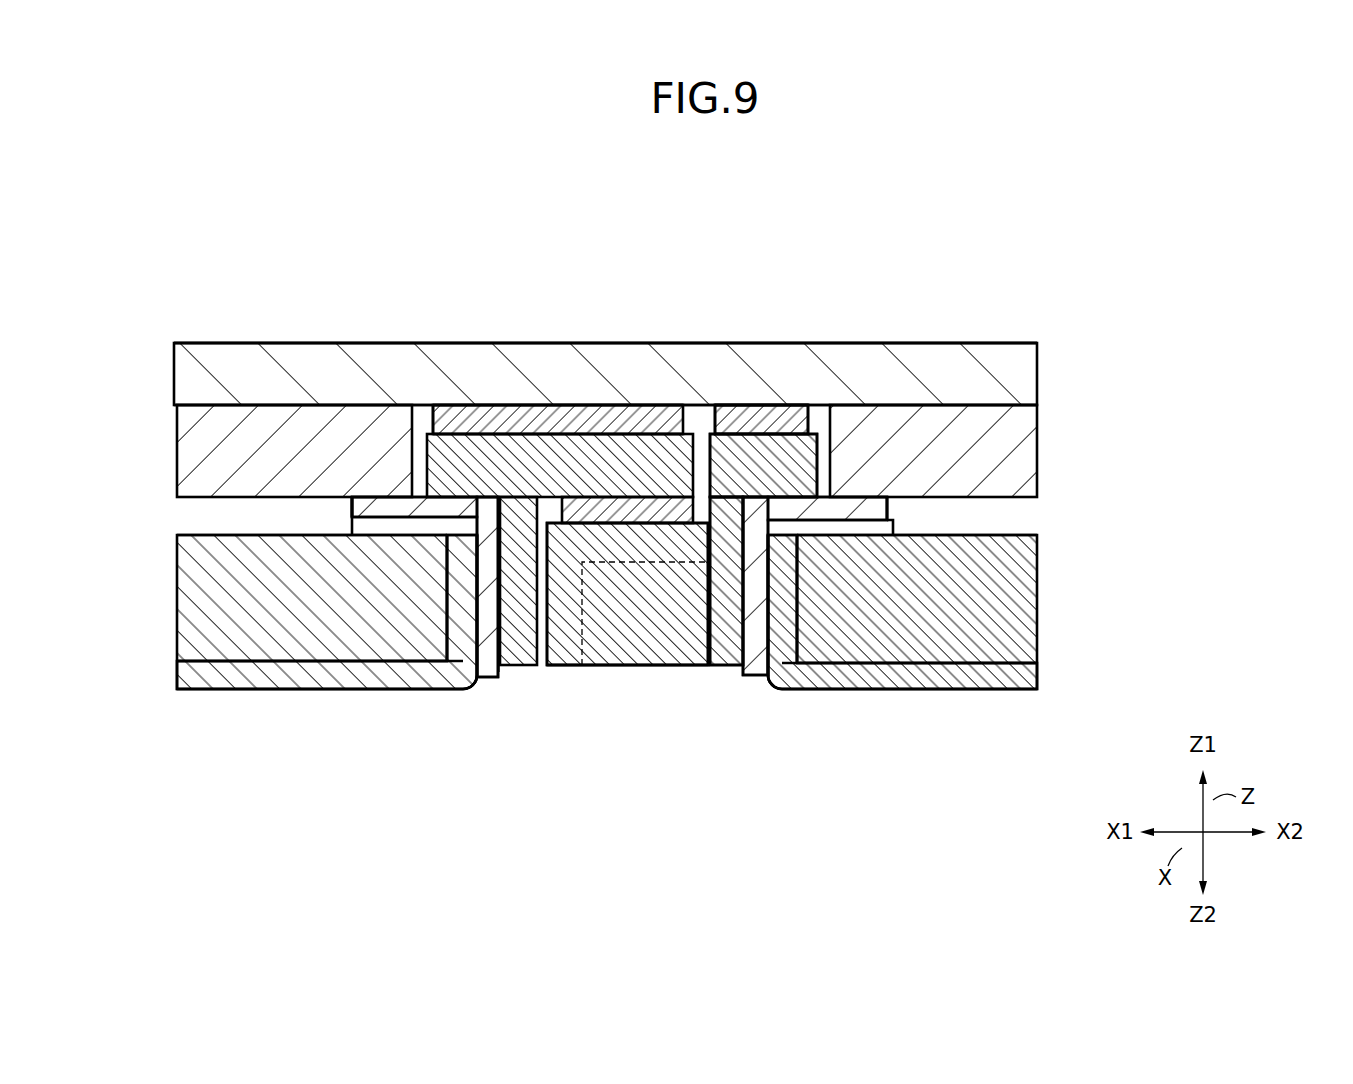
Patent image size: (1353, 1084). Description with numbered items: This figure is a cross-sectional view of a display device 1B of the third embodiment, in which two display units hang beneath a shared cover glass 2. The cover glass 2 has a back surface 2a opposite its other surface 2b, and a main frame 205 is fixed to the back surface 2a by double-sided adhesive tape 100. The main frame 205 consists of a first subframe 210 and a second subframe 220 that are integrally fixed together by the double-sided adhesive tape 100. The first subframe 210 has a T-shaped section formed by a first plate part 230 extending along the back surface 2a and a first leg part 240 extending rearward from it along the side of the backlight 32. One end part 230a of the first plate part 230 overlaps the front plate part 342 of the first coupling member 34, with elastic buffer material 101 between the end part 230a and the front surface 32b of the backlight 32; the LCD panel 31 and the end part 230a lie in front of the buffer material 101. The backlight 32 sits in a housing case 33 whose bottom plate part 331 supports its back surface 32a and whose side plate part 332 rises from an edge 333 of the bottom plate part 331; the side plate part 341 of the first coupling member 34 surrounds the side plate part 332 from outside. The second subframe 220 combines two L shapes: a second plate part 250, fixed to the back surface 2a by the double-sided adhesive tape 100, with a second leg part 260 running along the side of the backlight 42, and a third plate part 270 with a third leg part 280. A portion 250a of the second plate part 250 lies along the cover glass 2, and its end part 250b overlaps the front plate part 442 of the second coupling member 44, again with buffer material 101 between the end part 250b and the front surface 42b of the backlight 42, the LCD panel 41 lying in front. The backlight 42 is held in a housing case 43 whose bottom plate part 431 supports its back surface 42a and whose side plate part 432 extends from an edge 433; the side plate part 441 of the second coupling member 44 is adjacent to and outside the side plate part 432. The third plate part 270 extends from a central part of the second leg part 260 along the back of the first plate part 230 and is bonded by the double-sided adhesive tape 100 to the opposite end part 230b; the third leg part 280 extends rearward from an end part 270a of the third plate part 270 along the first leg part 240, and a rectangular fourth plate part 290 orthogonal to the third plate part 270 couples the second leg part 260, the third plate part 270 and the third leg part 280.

The vibrating device 1B is at (697, 181).
The cover glass 2 is at (990, 360).
The back surface of the cover glass 2a is at (1040, 407).
The upper surface of base substrate 2b is at (1018, 342).
The LCD panel 31 is at (177, 445).
The backlight 32 is at (177, 598).
The back surface of the backlight 32a is at (234, 664).
The front surface of the backlight 32b is at (226, 530).
The housing case 33 is at (181, 698).
The bottom plate part 331 is at (347, 682).
The side plate part 332 is at (457, 605).
The edge 333 is at (461, 682).
The first coupling member 34 is at (487, 690).
The side plate part 341 is at (521, 672).
The front plate part 342 is at (370, 512).
The LCD panel 41 is at (1040, 464).
The backlight 42 is at (1040, 610).
The back surface of the backlight 42a is at (928, 666).
The front surface of the backlight 42b is at (1040, 524).
The housing case 43 is at (1028, 699).
The bottom plate part 431 is at (990, 691).
The side plate part 432 is at (782, 590).
The edge 433 is at (782, 684).
The second coupling member 44 is at (748, 688).
The side plate part 441 is at (760, 678).
The front plate part 442 is at (877, 528).
The double-sided adhesive tape 100 is at (613, 438).
The buffer material 101 is at (357, 503).
The main frame 205 is at (658, 693).
The first subframe 210 is at (527, 678).
The second subframe 220 is at (638, 678).
The first plate part 230 is at (506, 452).
The end part of the first plate part 230a is at (425, 455).
The end part of the first plate part 230b is at (642, 478).
The first leg part 240 is at (507, 587).
The second plate part 250 is at (803, 418).
The body of second support portion 250a is at (727, 445).
The end part of the second plate part 250b is at (761, 419).
The second leg part 260 is at (718, 668).
The third plate part 270 is at (653, 458).
The end part of the third plate part 270a is at (552, 535).
The third leg part 280 is at (567, 668).
The fourth plate part 290 is at (600, 668).